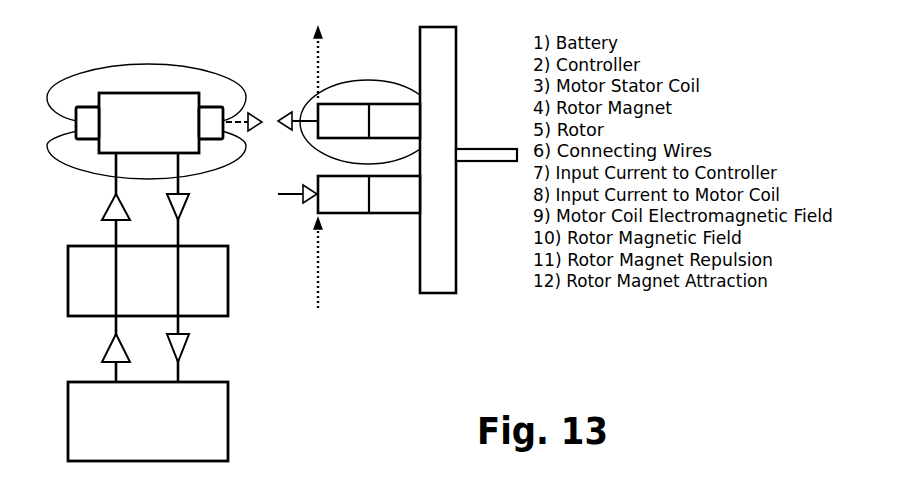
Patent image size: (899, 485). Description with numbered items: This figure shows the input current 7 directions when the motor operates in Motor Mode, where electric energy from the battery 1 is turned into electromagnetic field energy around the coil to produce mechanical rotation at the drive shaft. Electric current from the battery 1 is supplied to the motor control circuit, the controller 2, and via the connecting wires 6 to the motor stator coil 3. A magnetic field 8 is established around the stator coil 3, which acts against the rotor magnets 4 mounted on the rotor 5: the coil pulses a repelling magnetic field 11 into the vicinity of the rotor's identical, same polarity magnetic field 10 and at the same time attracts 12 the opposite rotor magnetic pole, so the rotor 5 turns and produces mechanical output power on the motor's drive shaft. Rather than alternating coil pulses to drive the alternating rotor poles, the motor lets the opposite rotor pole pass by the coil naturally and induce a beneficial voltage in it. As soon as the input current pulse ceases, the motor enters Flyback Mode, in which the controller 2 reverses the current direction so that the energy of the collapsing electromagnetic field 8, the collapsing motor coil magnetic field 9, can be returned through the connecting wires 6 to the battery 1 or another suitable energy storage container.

The battery 1 is at (122, 421).
The controller 2 is at (124, 281).
The motor stator coil 3 is at (138, 123).
The rotor magnet 4 is at (369, 133).
The rotor 5 is at (468, 160).
The connecting wires 6 is at (147, 267).
The input current 7 is at (128, 207).
The magnetic field 8 is at (131, 215).
The collapsing motor coil magnetic field 9 is at (146, 121).
The same polarity magnetic field 10 is at (368, 121).
The repelling magnetic field 11 is at (300, 74).
The attraction of opposite rotor magnetic field 12 is at (300, 249).